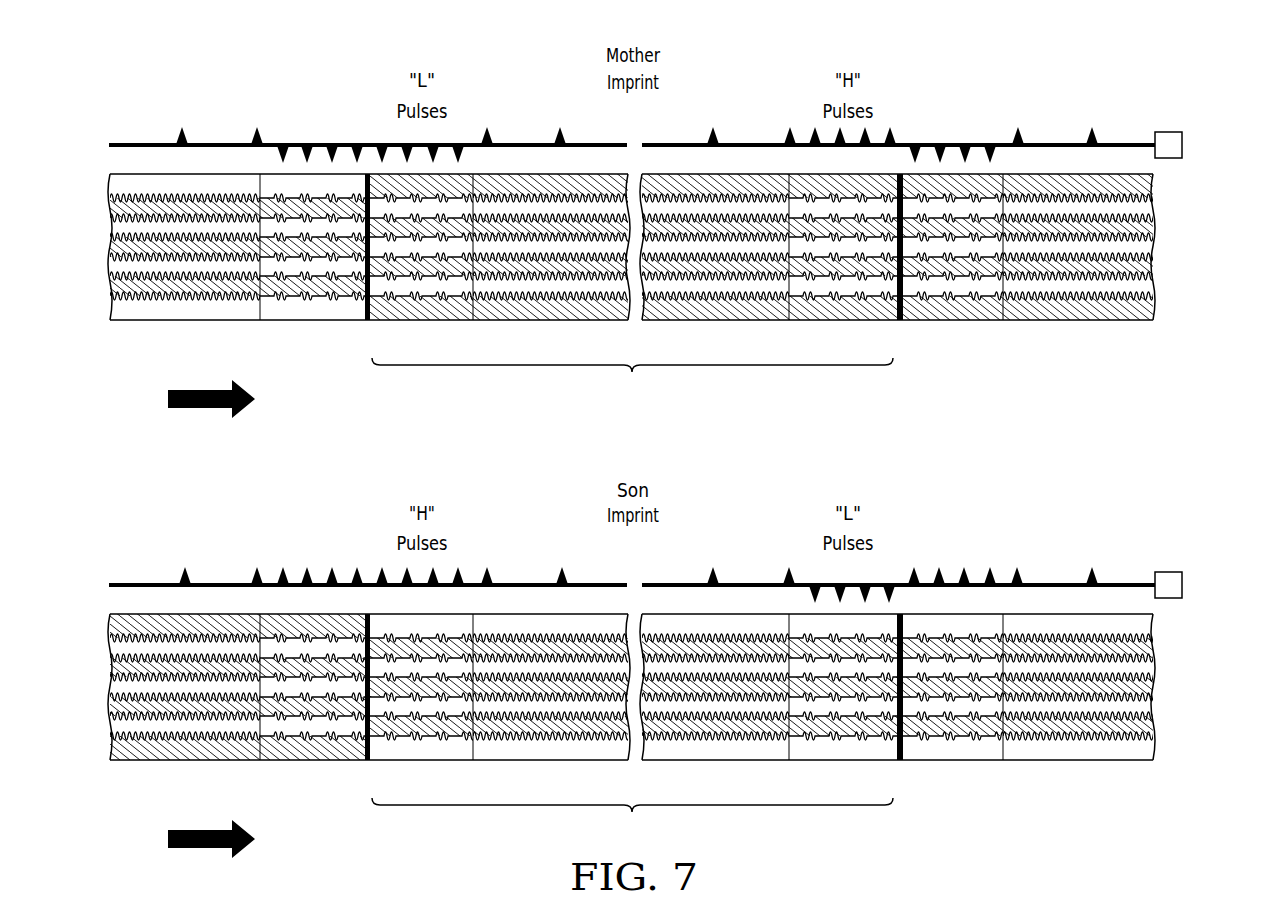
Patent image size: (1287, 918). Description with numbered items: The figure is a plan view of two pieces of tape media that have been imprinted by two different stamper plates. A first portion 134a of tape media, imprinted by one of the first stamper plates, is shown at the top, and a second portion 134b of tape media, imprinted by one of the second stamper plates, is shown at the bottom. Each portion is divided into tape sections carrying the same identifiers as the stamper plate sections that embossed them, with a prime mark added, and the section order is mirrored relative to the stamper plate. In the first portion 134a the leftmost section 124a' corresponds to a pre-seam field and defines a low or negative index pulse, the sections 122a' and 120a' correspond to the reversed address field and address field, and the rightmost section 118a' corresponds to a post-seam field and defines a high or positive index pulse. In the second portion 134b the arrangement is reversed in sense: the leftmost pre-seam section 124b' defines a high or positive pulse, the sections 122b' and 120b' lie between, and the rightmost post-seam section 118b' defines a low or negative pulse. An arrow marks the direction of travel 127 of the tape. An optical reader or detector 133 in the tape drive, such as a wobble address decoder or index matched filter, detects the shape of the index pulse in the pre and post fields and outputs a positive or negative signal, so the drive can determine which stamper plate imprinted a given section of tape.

The leftmost tape section of first tape media portion 124a' is at (445, 263).
The tape section corresponding to third stamper plate section 122a' is at (554, 263).
The tape section corresponding to second stamper plate section 120a' is at (723, 264).
The rightmost tape section of first tape media portion 118a' is at (871, 264).
The first portion of tape media 134a is at (632, 379).
The leftmost tape section of second tape media portion 124b' is at (445, 713).
The tape section corresponding to third stamper plate section 122b' is at (554, 713).
The tape section corresponding to second stamper plate section 120b' is at (723, 714).
The rightmost tape section of second tape media portion 118b' is at (871, 714).
The second portion of tape media 134b is at (632, 820).
The direction of travel 127 is at (167, 400).
The optical reader or detector 133 is at (1166, 132).